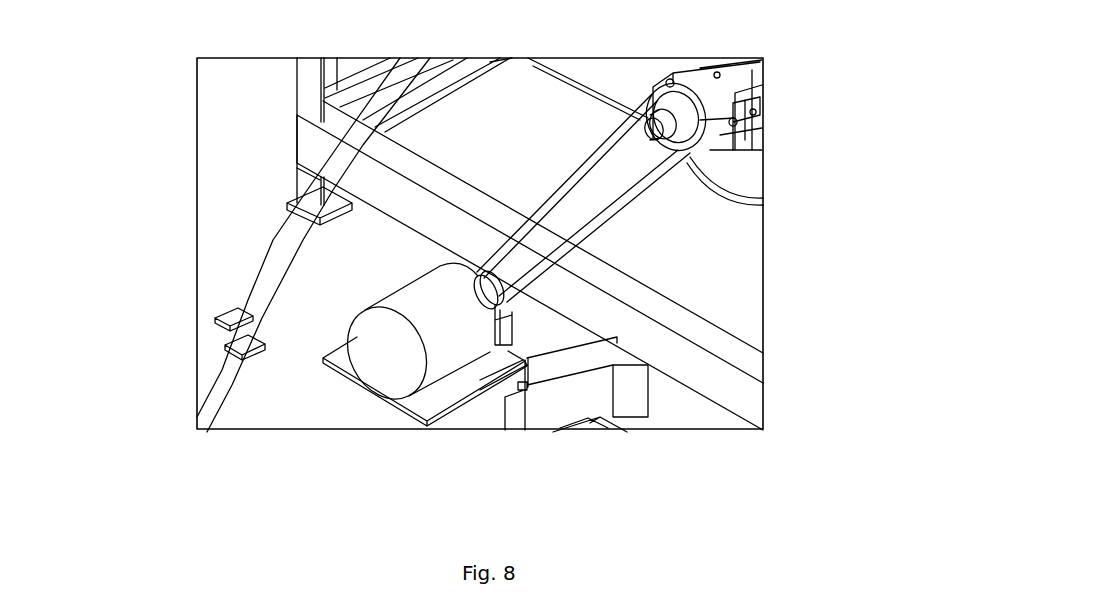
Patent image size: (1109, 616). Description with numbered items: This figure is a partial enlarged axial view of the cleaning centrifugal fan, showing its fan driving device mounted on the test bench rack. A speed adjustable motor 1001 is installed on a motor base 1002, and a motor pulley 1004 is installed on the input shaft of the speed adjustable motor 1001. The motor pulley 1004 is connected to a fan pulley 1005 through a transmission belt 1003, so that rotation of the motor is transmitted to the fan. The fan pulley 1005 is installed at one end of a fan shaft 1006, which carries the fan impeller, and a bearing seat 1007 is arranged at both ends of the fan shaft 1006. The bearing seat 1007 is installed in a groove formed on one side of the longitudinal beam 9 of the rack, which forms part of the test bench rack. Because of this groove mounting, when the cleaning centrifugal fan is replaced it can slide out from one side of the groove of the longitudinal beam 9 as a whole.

The longitudinal beam of rack 9 is at (673, 57).
The speed adjustable motor 1001 is at (357, 312).
The motor base 1002 is at (323, 358).
The transmission belt 1003 is at (492, 300).
The motor pulley 1004 is at (505, 320).
The fan pulley 1005 is at (757, 93).
The fan shaft 1006 is at (757, 120).
The bearing seat 1007 is at (760, 135).